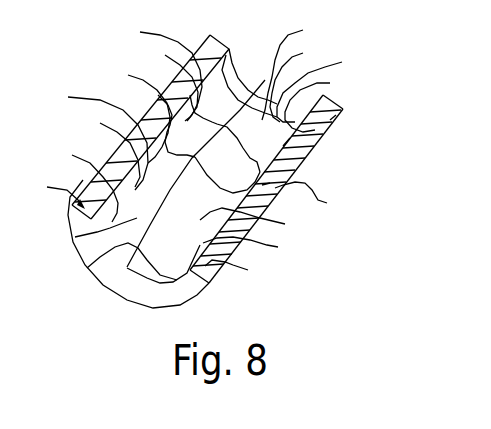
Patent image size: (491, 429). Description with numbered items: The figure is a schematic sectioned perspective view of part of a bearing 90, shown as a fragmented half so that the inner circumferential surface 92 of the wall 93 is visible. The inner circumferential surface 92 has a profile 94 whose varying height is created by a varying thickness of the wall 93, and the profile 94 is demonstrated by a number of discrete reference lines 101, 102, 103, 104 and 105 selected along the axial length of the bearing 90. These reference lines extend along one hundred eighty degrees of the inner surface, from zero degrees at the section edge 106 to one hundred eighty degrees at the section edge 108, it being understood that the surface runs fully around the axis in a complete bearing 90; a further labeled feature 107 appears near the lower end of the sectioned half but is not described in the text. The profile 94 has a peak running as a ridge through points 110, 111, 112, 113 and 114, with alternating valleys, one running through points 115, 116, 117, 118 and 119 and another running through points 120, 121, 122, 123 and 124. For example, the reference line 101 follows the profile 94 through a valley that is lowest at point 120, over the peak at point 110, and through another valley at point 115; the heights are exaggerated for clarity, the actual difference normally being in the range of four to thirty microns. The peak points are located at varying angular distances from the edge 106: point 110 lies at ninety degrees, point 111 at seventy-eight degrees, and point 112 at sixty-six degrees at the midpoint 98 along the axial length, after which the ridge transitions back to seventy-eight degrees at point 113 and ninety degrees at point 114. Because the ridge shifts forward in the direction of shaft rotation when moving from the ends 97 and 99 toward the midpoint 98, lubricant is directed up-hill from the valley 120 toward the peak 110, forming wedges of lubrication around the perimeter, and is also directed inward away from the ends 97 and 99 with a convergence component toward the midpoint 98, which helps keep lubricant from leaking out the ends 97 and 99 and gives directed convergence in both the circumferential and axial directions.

The bearing 90 is at (281, 189).
The inner circumferential surface 92 is at (249, 83).
The wall 93 is at (353, 125).
The profile 94 is at (318, 102).
The end 97 is at (138, 261).
The midpoint 98 is at (311, 198).
The end 99 is at (320, 87).
The reference line 101 is at (79, 184).
The reference line 102 is at (102, 149).
The reference line 103 is at (131, 114).
The reference line 104 is at (165, 81).
The reference line 105 is at (150, 118).
The section edge 106 is at (49, 193).
The segment 107 is at (243, 269).
The section edge 108 is at (104, 262).
The peak point 110 is at (163, 258).
The peak point 111 is at (196, 173).
The peak point 112 is at (227, 171).
The peak point 113 is at (229, 133).
The peak point 114 is at (302, 82).
The valley point 115 is at (75, 232).
The valley point 116 is at (94, 138).
The valley point 117 is at (184, 126).
The valley point 118 is at (156, 71).
The valley point 119 is at (298, 69).
The valley point 120 is at (257, 246).
The valley point 121 is at (259, 221).
The valley point 122 is at (318, 181).
The valley point 123 is at (337, 146).
The valley point 124 is at (361, 102).